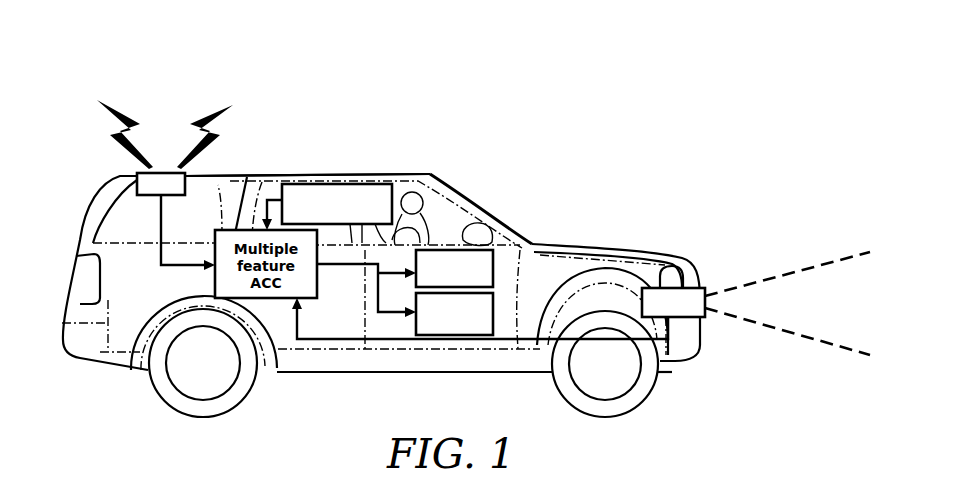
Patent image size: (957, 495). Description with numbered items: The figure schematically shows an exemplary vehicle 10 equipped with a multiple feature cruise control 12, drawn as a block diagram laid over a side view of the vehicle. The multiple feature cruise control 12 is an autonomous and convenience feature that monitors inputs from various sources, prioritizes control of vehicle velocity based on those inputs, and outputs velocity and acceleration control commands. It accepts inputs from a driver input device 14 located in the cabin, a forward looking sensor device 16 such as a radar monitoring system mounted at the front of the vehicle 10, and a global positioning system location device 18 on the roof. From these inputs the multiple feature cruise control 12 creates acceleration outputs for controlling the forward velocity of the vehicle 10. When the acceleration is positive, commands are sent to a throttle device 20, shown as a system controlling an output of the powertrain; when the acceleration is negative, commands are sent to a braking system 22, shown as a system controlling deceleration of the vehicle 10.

The vehicle 10 is at (470, 178).
The multiple feature cruise control 12 is at (240, 178).
The driver input device 14 is at (393, 195).
The forward looking sensor device 16 is at (705, 313).
The global positioning system (GPS) location device 18 is at (163, 166).
The throttle device 20 is at (493, 272).
The braking system 22 is at (493, 317).